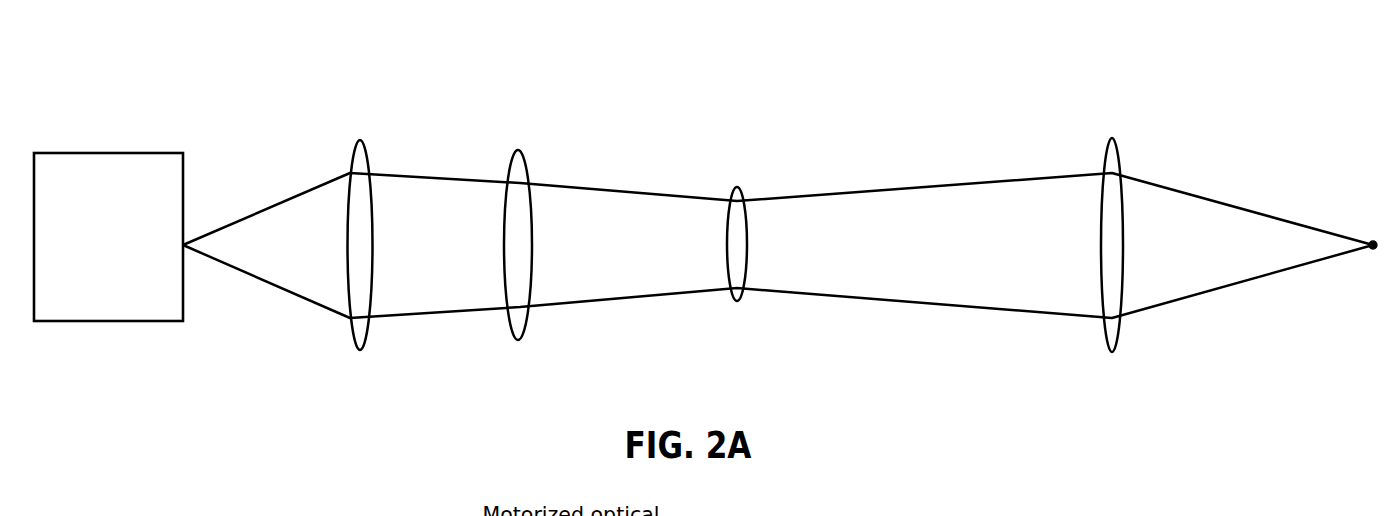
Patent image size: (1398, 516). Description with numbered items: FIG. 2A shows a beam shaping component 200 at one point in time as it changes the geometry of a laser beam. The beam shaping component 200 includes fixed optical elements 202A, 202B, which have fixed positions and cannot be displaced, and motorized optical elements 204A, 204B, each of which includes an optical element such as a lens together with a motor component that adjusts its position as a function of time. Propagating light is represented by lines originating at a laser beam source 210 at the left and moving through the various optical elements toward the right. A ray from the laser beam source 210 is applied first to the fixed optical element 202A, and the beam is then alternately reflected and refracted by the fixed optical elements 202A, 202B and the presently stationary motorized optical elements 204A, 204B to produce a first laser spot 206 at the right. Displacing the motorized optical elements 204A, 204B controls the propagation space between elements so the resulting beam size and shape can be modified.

The beam shaping component 200 is at (214, 73).
The laser beam source 210 is at (87, 296).
The fixed optical element 202A is at (360, 140).
The motorized optical element 204A is at (525, 328).
The motorized optical element 204B is at (742, 302).
The fixed optical element 202B is at (1112, 138).
The first laser spot 206 is at (1373, 240).